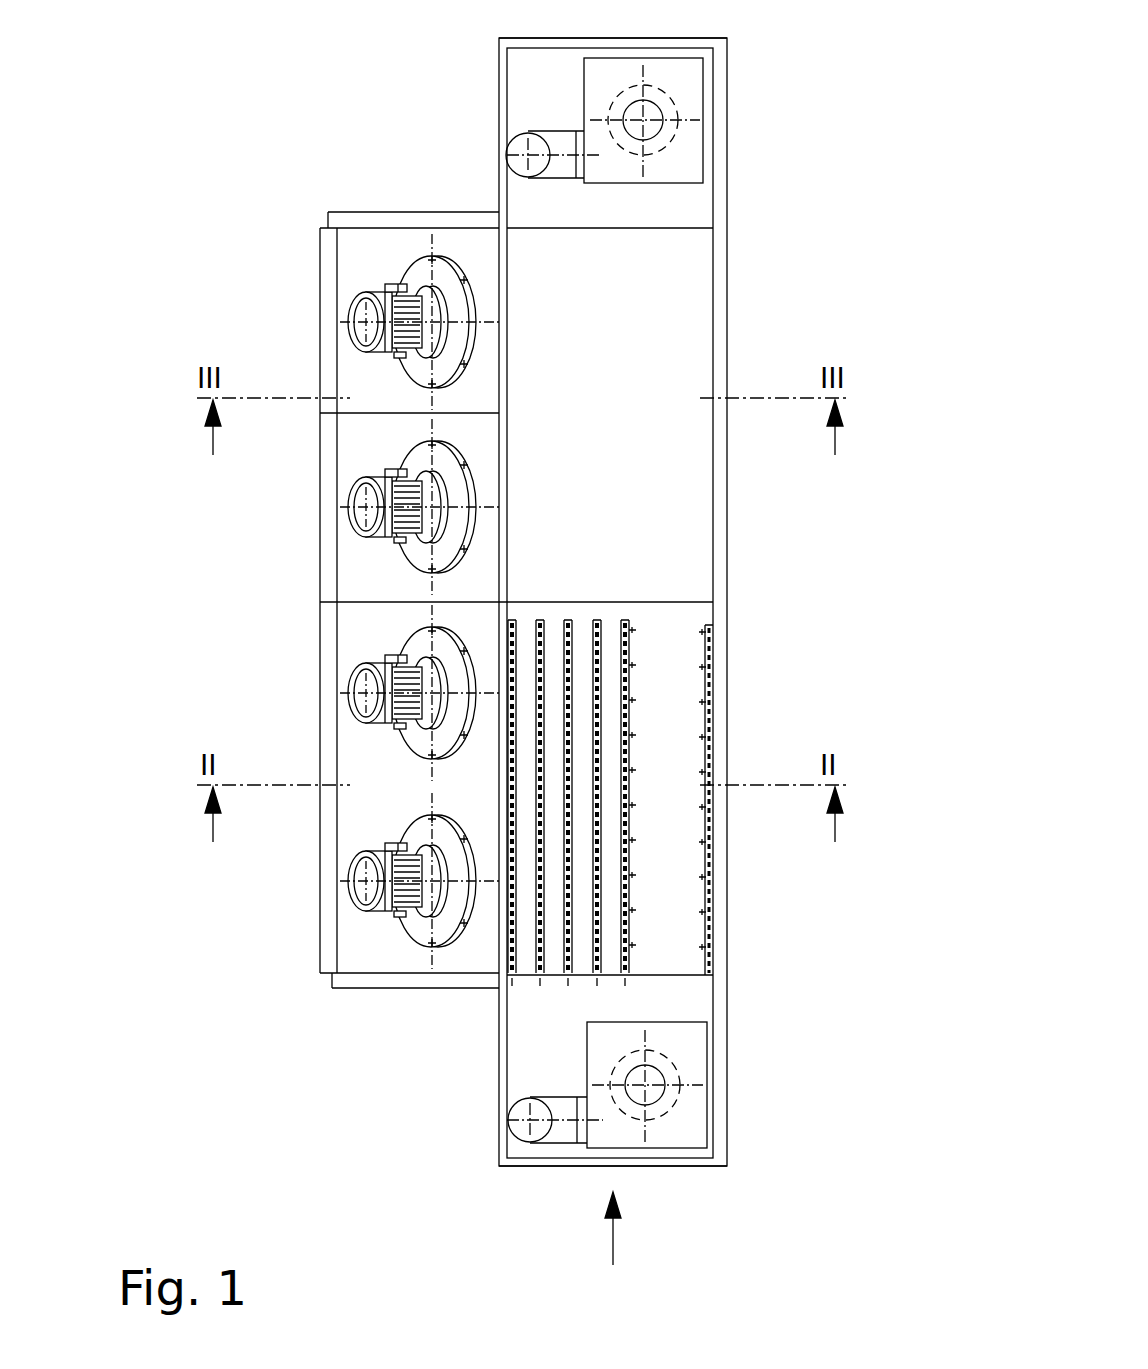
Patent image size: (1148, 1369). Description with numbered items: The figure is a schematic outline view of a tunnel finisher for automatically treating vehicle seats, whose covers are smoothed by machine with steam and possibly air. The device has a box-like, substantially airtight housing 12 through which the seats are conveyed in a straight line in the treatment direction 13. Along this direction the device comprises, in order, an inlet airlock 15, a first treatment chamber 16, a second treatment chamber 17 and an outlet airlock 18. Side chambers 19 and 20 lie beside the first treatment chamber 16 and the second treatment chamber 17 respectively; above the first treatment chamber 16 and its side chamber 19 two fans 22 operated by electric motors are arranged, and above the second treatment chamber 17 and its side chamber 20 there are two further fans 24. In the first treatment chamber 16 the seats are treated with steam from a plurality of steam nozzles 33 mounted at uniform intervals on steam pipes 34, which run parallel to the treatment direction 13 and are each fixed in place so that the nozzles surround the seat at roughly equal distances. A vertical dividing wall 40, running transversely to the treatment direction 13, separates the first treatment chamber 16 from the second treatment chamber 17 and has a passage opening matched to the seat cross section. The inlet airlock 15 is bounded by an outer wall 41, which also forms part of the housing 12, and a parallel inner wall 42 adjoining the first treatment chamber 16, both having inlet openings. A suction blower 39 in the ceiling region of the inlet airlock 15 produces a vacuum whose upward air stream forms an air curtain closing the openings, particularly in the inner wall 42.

The housing 12 is at (730, 938).
The treatment direction 13 is at (613, 1240).
The inlet airlock 15 is at (738, 1091).
The first treatment chamber 16 is at (672, 722).
The second treatment chamber 17 is at (680, 518).
The outlet airlock 18 is at (740, 108).
The side chamber 19 is at (374, 955).
The side chamber 20 is at (352, 558).
The fans 22 is at (352, 690).
The fans 24 is at (352, 315).
The steam nozzles 33 is at (635, 910).
The steam pipes 34 is at (603, 745).
The suction blower 39 is at (690, 98).
The dividing wall 40 is at (682, 600).
The outer wall 41 is at (665, 46).
The inner wall 42 is at (672, 228).